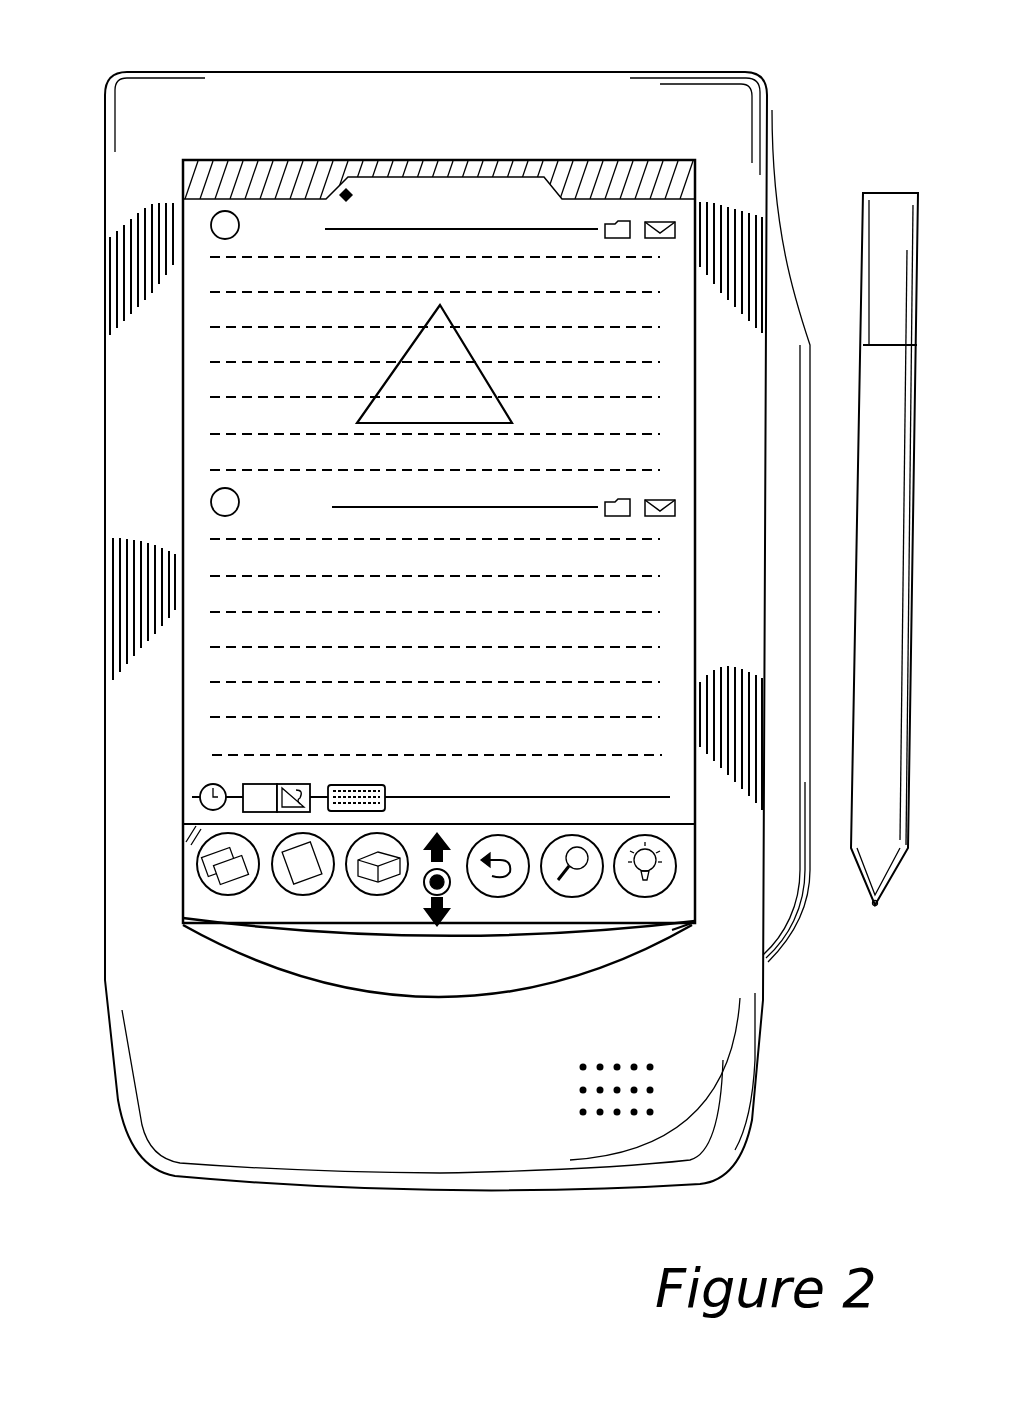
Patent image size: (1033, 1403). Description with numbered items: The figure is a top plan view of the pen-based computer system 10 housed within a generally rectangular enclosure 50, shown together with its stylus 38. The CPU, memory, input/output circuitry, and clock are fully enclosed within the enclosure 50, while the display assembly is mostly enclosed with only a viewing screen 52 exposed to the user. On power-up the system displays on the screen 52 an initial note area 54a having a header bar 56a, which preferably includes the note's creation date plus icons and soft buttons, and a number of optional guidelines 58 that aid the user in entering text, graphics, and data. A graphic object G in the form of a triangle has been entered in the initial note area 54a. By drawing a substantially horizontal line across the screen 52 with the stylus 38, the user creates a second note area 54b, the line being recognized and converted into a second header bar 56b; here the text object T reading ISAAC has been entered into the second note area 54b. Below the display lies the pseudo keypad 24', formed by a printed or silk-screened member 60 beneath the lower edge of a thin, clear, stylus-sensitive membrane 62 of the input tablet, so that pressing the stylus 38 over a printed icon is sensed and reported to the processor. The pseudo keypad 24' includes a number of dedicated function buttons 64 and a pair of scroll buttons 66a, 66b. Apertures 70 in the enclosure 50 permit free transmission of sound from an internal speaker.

The pen-based computer system 10 is at (146, 40).
The pseudo keypad 24' is at (490, 592).
The stylus 38 is at (893, 203).
The enclosure 50 is at (106, 962).
The viewing screen 52 is at (200, 688).
The initial note area 54a is at (600, 398).
The second note area 54b is at (600, 646).
The header bar 56a is at (498, 232).
The second header bar 56b is at (480, 507).
The guidelines 58 is at (300, 367).
The printed or silk-screened member 60 is at (190, 904).
The stylus-sensitive membrane 62 is at (183, 836).
The dedicated function buttons 64 is at (373, 892).
The scroll button 66a is at (437, 830).
The scroll button 66b is at (437, 925).
The apertures 70 is at (690, 1090).
The graphic object G is at (485, 350).
The text object T is at (368, 608).